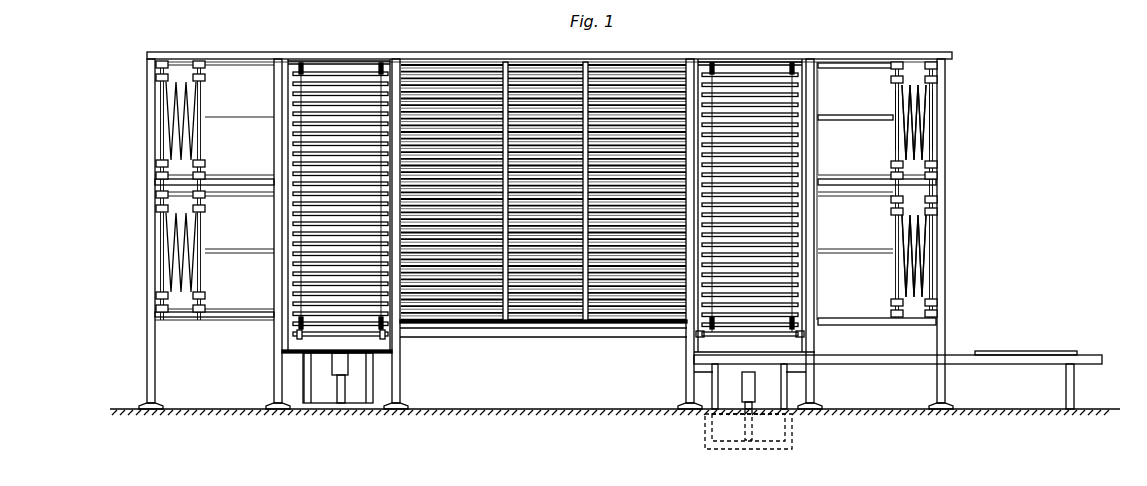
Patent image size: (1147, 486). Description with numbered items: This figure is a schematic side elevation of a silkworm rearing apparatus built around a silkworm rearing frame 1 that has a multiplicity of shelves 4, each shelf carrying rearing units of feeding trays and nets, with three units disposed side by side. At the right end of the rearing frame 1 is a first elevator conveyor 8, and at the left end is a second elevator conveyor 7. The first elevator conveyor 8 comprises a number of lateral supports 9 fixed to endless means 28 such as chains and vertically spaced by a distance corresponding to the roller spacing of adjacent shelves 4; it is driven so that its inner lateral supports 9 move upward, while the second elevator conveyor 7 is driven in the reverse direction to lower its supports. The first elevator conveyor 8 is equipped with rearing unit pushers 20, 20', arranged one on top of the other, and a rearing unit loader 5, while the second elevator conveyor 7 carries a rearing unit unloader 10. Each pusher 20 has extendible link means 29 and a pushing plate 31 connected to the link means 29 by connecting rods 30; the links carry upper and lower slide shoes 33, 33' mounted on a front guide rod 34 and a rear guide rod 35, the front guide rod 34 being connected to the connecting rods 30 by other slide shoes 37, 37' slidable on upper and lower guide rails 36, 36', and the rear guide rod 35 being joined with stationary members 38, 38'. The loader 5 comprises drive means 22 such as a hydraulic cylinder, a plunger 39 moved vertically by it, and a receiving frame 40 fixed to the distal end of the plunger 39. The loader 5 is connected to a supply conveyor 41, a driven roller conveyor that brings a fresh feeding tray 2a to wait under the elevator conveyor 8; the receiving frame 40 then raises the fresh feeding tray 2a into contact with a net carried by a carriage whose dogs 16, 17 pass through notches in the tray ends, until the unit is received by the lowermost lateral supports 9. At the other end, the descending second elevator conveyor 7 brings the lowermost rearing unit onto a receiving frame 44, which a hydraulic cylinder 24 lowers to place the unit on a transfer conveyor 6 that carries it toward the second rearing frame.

The silkworm rearing frame 1 is at (508, 52).
The fresh feeding tray 2a is at (1030, 351).
The shelf 4 is at (447, 72).
The rearing unit loader 5 is at (710, 380).
The rearing unit transfer conveyor 6 is at (296, 337).
The second elevator conveyor 7 is at (333, 70).
The first elevator conveyor 8 is at (743, 62).
The lateral support 9 is at (765, 100).
The rearing unit unloader 10 is at (382, 382).
The dog 16 is at (697, 337).
The dog 17 is at (803, 338).
The rearing unit pusher 20 is at (958, 190).
The rearing unit pusher 20' is at (179, 169).
The drive means 22 is at (752, 388).
The hydraulic cylinder 24 is at (346, 372).
The endless means 28 is at (712, 95).
The extendible link means 29 is at (922, 147).
The connecting rod 30 is at (838, 74).
The pushing plate 31 is at (810, 85).
The upper slide shoe 33 is at (938, 113).
The lower slide shoe 33' is at (929, 227).
The front guide rod 34 is at (895, 102).
The rear guide rod 35 is at (933, 115).
The upper guide rail 36 is at (855, 168).
The lower guide rail 36' is at (877, 246).
The slide shoe 37 is at (903, 48).
The slide shoe 37' is at (905, 326).
The stationary member 38 is at (955, 51).
The stationary member 38' is at (957, 306).
The plunger 39 is at (751, 405).
The receiving frame 40 is at (714, 398).
The supply conveyor 41 is at (1090, 355).
The receiving frame 44 is at (304, 396).